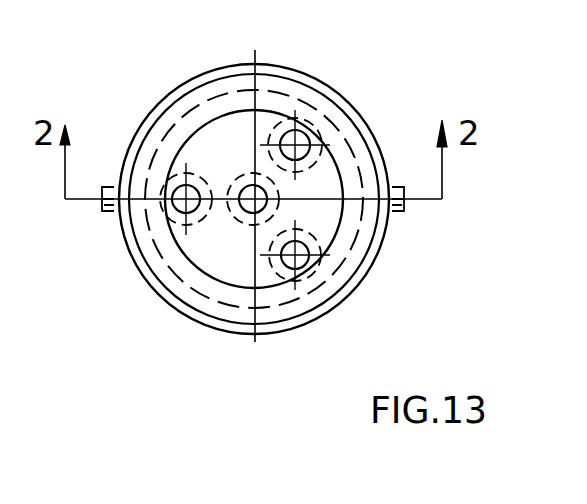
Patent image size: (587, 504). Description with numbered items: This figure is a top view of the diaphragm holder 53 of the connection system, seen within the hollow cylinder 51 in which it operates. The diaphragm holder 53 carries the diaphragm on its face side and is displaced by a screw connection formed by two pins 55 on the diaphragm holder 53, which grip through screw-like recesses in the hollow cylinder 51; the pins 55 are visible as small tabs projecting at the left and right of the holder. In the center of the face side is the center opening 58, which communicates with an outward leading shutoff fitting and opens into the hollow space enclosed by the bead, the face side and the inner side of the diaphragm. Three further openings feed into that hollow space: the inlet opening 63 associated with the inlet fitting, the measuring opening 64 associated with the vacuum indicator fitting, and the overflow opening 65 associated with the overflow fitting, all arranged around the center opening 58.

The hollow cylinder 51 is at (342, 124).
The diaphragm holder 53 is at (348, 278).
The pins 55 is at (108, 213).
The center opening 58 is at (248, 208).
The inlet opening 63 is at (169, 184).
The measuring opening 64 is at (303, 135).
The overflow opening 65 is at (283, 264).